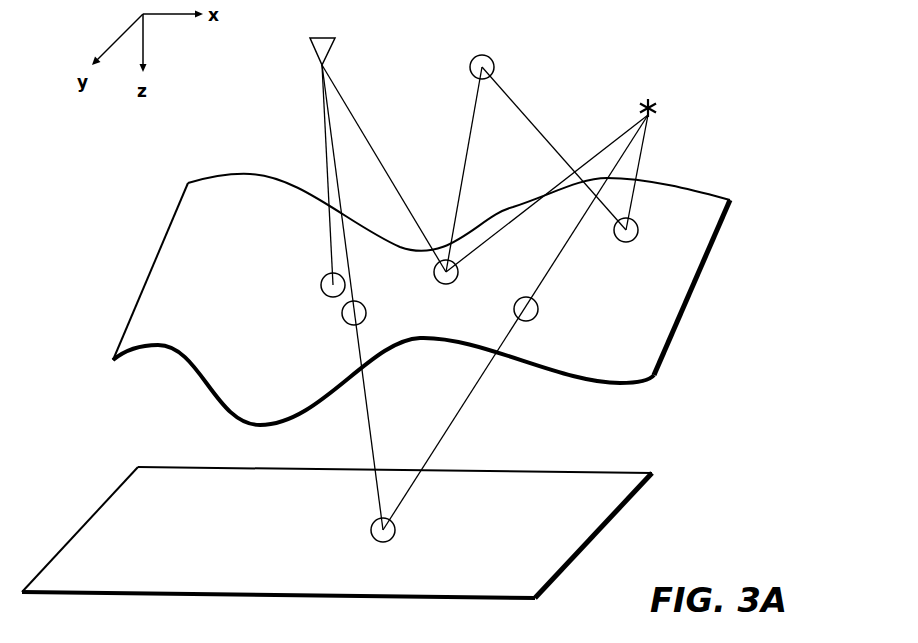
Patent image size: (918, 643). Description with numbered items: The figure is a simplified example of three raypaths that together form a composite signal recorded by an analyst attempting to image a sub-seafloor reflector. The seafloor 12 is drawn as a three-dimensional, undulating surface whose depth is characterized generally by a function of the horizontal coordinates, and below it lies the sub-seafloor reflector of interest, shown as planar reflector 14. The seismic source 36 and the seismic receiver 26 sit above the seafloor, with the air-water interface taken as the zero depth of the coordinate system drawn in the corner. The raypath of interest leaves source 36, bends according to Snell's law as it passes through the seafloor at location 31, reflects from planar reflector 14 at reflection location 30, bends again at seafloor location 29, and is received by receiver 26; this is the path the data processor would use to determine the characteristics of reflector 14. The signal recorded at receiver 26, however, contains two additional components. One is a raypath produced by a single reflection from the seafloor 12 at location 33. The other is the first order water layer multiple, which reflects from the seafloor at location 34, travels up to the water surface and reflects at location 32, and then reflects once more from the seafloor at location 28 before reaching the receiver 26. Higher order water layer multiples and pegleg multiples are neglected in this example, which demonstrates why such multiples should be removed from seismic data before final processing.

The seafloor 12 is at (672, 296).
The planar reflector 14 is at (582, 533).
The seismic receiver 26 is at (337, 50).
The reflection location of first order water layer multiple 28 is at (325, 278).
The seafloor location 29 is at (366, 316).
The reflection location 30 is at (372, 526).
The seafloor location 31 is at (528, 321).
The reflection location at air-water interface 32 is at (495, 63).
The seafloor reflection location 33 is at (447, 260).
The reflection location of first order water layer multiple 34 is at (640, 228).
The seismic source 36 is at (660, 102).